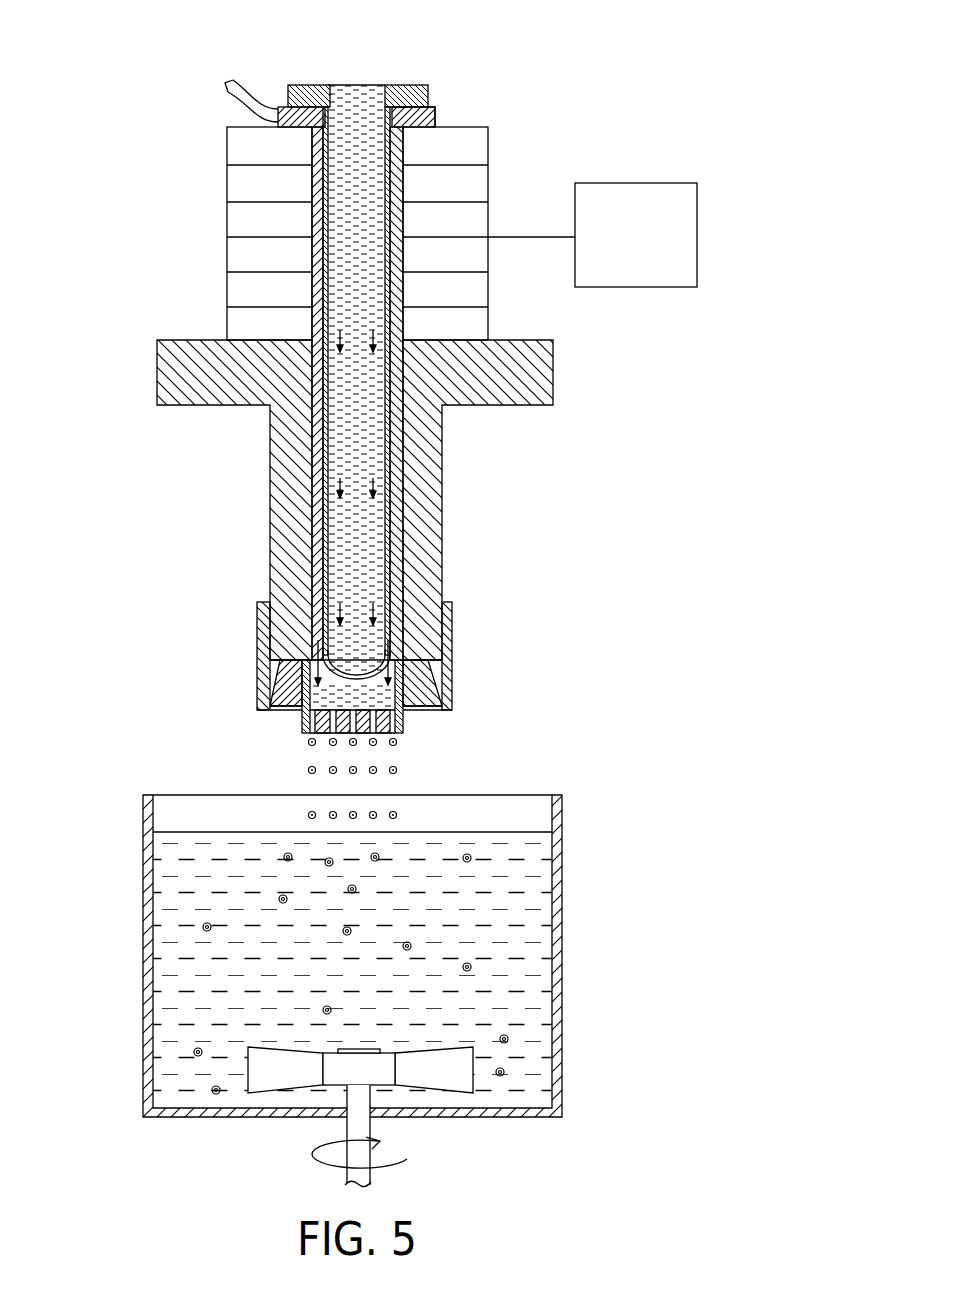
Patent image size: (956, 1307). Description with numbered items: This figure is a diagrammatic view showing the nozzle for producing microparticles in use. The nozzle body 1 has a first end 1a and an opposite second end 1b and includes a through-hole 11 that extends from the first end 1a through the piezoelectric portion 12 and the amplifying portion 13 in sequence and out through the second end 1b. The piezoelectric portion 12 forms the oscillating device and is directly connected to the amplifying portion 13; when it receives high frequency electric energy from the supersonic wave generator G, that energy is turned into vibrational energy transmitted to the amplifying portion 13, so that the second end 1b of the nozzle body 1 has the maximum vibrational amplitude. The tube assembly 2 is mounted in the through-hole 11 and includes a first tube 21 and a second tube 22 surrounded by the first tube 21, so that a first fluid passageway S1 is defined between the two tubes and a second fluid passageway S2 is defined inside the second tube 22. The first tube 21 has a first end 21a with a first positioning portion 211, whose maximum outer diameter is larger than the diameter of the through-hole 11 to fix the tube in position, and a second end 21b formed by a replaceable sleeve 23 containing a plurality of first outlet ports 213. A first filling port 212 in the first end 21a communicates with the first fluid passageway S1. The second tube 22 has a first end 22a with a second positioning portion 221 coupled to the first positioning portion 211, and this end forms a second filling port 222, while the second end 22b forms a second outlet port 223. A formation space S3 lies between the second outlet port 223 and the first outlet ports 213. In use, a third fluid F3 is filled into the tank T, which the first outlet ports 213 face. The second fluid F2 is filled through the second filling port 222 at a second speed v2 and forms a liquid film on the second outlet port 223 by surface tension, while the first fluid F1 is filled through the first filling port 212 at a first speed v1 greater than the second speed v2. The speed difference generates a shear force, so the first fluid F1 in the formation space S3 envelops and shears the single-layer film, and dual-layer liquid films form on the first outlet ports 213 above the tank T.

The nozzle body 1 is at (381, 214).
The first end 1a is at (238, 127).
The second end 1b is at (318, 687).
The through-hole 11 is at (405, 223).
The piezoelectric portion 12 is at (478, 261).
The amplifying portion 13 is at (428, 452).
The tube assembly 2 is at (359, 409).
The first tube 21 is at (379, 337).
The first end 21a is at (432, 104).
The second end 21b is at (330, 735).
The first positioning portion 211 is at (435, 118).
The first filling port 212 is at (236, 80).
The first outlet ports 213 is at (395, 736).
The second tube 22 is at (353, 344).
The first end 22a is at (412, 85).
The second end 22b is at (318, 660).
The second positioning portion 221 is at (302, 85).
The second filling port 222 is at (354, 85).
The second outlet port 223 is at (398, 715).
The sleeve 23 is at (405, 722).
The supersonic wave generator G is at (636, 287).
The tank T is at (341, 957).
The first fluid F1 is at (322, 568).
The second fluid F2 is at (340, 550).
The third fluid F3 is at (205, 838).
The first fluid passageway S1 is at (392, 498).
The second fluid passageway S2 is at (370, 522).
The formation space S3 is at (398, 700).
The first speed v1 is at (398, 656).
The second speed v2 is at (378, 612).